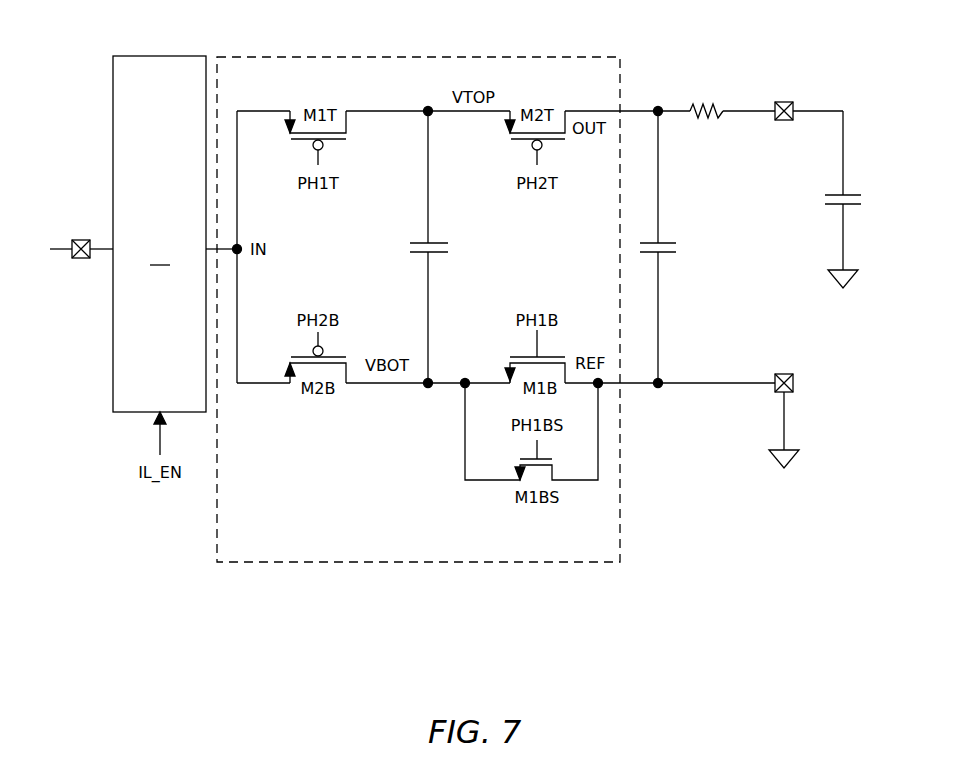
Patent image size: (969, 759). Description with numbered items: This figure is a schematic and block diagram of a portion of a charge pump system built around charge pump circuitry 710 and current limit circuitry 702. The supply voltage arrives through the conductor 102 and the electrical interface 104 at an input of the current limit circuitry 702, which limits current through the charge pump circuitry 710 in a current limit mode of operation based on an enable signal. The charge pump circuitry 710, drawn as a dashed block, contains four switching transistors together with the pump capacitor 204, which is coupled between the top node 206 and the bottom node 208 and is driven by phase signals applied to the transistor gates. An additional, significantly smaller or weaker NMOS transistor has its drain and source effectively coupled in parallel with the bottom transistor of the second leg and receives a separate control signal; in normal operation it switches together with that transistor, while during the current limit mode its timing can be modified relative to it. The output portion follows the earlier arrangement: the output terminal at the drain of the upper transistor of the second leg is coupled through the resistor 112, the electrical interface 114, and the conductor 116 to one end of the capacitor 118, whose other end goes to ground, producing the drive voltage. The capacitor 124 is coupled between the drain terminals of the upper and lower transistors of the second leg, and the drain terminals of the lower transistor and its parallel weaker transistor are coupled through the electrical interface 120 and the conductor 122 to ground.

The conductor 102 is at (62, 247).
The electrical interface 104 is at (82, 258).
The resistor 112 is at (712, 105).
The electrical interface 114 is at (784, 121).
The conductor 116 is at (842, 148).
The capacitor 118 is at (832, 206).
The electrical interface 120 is at (785, 373).
The conductor 122 is at (783, 420).
The capacitor 124 is at (670, 243).
The CPUMP capacitor 204 is at (438, 243).
The top node 206 is at (427, 108).
The bottom node 208 is at (431, 381).
The current limit circuitry 702 is at (159, 234).
The charge pump circuitry 710 is at (410, 57).